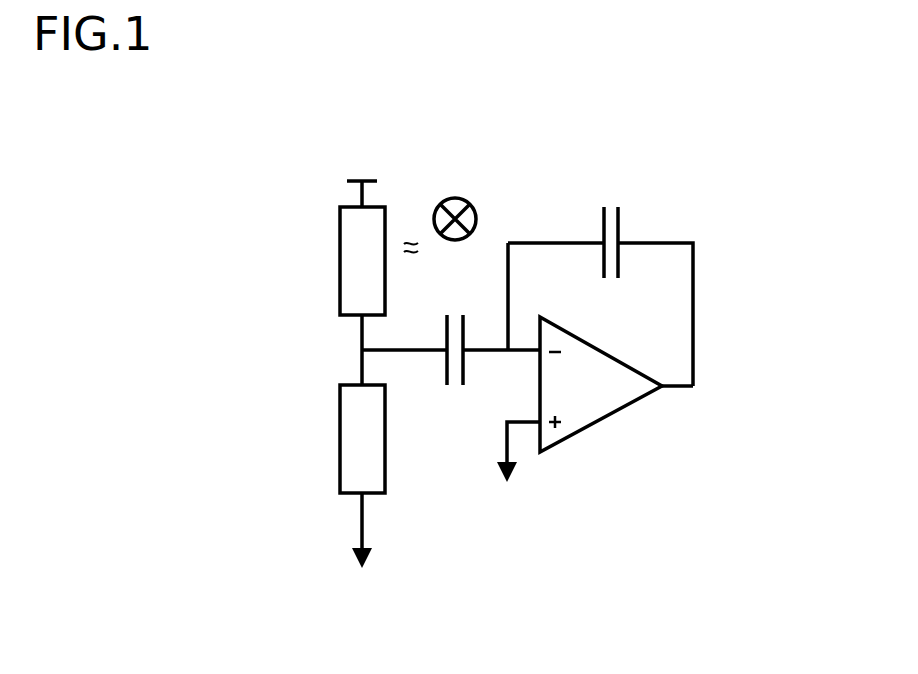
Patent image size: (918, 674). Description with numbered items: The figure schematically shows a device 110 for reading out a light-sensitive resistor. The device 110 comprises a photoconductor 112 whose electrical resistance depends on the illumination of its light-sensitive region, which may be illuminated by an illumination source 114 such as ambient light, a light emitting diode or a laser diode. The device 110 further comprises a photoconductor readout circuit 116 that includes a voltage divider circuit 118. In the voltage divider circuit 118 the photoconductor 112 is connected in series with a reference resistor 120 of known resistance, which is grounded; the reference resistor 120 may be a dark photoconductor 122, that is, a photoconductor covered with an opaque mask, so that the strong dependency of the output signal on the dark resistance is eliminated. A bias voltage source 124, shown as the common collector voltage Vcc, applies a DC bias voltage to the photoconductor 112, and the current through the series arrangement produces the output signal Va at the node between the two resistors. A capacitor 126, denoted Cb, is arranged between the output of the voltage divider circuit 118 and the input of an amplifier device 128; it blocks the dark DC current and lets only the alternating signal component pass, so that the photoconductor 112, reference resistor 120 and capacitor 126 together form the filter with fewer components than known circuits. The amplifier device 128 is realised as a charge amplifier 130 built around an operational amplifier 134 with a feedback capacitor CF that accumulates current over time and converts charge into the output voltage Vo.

The device 110 is at (553, 128).
The photoconductor 112 is at (328, 218).
The illumination source 114 is at (455, 188).
The photoconductor readout circuit 116 is at (583, 522).
The voltage divider circuit 118 is at (269, 339).
The reference resistor 120 is at (288, 484).
The dark photoconductor 122 is at (325, 492).
The bias voltage source 124 is at (353, 128).
The capacitor 126 is at (437, 368).
The amplifier device 128 is at (672, 344).
The charge amplifier 130 is at (672, 344).
The operational amplifier 134 is at (623, 430).